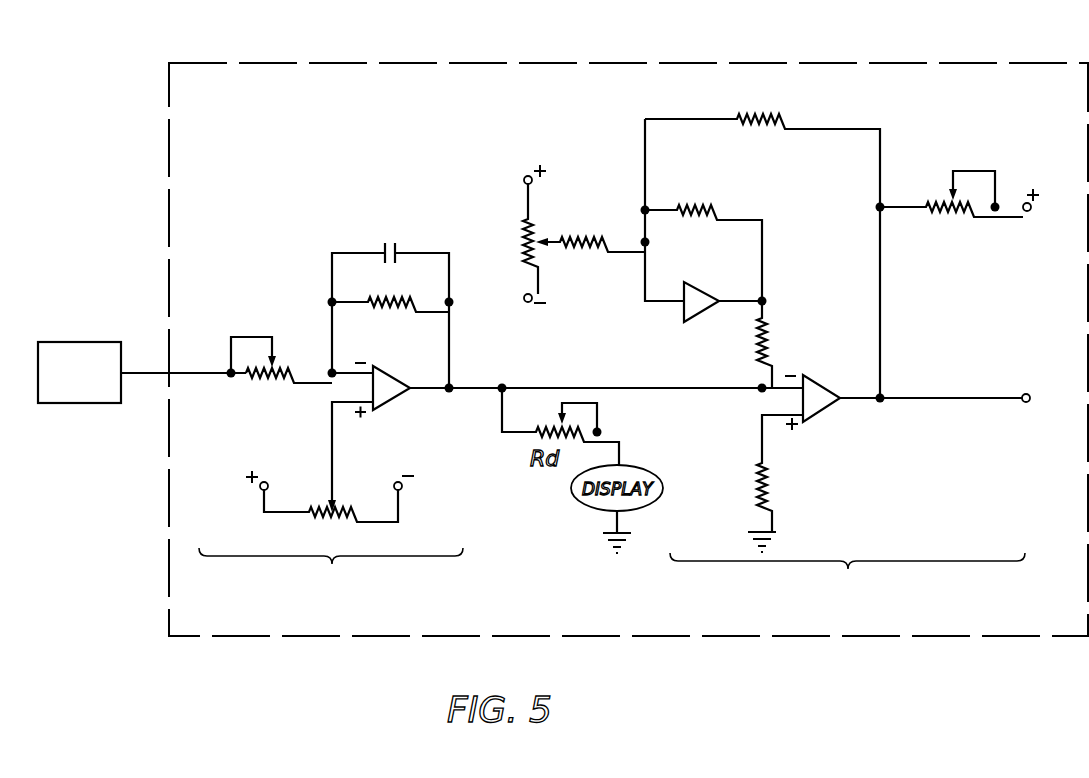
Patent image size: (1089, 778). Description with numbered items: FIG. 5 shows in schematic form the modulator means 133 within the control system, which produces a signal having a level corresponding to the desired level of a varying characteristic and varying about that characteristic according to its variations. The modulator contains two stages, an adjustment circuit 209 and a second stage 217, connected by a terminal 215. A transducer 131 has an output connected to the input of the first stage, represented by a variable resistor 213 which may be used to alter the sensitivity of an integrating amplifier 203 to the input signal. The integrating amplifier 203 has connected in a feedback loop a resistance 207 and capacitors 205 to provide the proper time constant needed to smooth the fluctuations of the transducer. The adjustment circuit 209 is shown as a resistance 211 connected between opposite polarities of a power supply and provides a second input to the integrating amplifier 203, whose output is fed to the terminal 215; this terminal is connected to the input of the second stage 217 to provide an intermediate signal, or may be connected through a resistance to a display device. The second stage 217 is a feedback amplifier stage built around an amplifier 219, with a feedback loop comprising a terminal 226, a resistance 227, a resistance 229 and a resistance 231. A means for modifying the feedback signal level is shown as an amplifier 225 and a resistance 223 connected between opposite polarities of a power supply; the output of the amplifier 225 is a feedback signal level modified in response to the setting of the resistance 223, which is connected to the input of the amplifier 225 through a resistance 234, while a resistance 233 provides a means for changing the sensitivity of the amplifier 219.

The transducer 131 is at (80, 386).
The modulator means 133 is at (169, 195).
The integrating amplifier 203 is at (402, 381).
The capacitors 205 is at (394, 240).
The resistance 207 is at (390, 314).
The adjustment circuit 209 is at (331, 574).
The resistance 211 is at (330, 470).
The variable resistor 213 is at (281, 370).
The terminal 215 is at (507, 376).
The second stage 217 is at (847, 580).
The amplifier 219 is at (912, 457).
The resistance 223 is at (522, 231).
The amplifier 225 is at (717, 288).
The terminal 226 is at (857, 208).
The resistance 227 is at (762, 244).
The resistance 229 is at (703, 241).
The resistance 231 is at (785, 344).
The resistance 233 is at (959, 205).
The resistance 234 is at (590, 233).